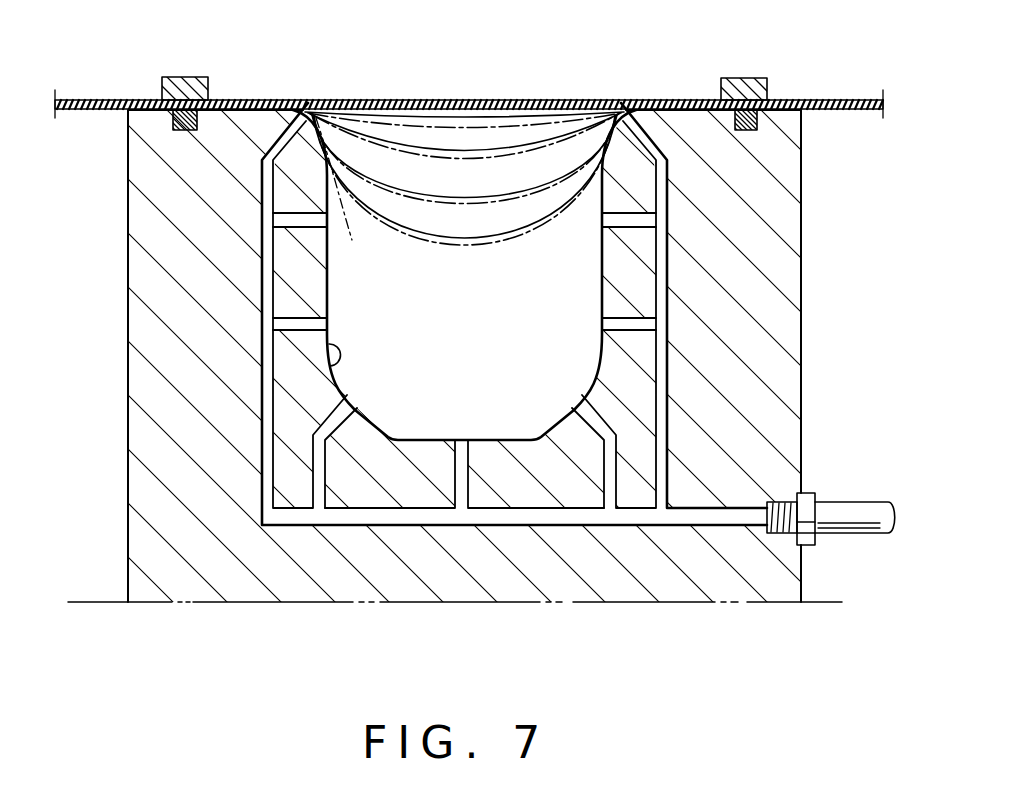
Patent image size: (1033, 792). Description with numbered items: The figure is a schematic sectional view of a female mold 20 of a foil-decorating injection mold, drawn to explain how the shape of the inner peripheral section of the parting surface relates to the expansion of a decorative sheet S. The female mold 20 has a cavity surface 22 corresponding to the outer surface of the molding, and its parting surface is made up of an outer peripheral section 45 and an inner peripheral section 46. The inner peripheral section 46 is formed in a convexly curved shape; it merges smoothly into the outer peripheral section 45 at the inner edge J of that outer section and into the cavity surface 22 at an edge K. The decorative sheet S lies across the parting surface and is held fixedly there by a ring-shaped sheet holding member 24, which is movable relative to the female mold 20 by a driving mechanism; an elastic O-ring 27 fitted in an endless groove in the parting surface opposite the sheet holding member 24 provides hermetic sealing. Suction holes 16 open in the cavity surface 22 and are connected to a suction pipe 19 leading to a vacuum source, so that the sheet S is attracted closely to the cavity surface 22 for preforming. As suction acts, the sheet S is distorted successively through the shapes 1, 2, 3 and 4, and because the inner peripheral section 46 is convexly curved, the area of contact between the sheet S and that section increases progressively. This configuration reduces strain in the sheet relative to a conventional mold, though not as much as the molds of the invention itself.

The decorative sheet S is at (87, 99).
The outer peripheral section 45 is at (232, 99).
The inner edge of outer peripheral section J is at (272, 99).
The second distorted shape of decorative sheet 2 is at (415, 150).
The first distorted shape of decorative sheet 1 is at (508, 122).
The inner peripheral section 46 is at (600, 107).
The sheet holding member 24 is at (738, 82).
The O-ring 27 is at (746, 131).
The female mold 20 is at (128, 302).
The edge between inner peripheral section and cavity surface K is at (343, 194).
The third distorted shape of decorative sheet 3 is at (418, 195).
The fourth distorted shape of decorative sheet 4 is at (520, 235).
The cavity surface 22 is at (340, 360).
The suction holes 16 is at (608, 462).
The suction pipe 19 is at (866, 503).